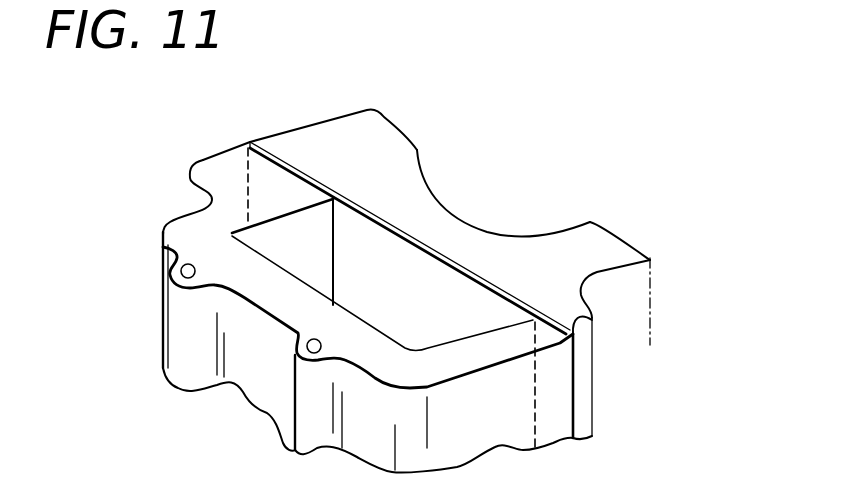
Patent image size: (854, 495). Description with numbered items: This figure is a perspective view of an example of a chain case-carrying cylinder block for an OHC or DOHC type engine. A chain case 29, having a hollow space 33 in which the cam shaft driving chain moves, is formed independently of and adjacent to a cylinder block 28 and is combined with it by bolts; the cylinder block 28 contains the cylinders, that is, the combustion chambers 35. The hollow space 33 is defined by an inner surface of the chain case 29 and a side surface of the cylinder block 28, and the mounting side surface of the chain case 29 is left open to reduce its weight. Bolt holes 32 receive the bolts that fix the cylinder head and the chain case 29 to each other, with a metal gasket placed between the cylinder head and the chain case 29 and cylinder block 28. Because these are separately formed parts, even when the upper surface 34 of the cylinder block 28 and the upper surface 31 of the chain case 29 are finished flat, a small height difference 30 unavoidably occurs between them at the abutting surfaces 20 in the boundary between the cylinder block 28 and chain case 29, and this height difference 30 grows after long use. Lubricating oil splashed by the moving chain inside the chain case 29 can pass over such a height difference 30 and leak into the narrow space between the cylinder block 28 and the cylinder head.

The abutting surfaces 20 is at (282, 188).
The cylinder block 28 is at (578, 358).
The chain case 29 is at (263, 360).
The height difference 30 is at (273, 153).
The upper surface of the chain case 31 is at (435, 365).
The bolt holes 32 is at (187, 270).
The hollow space 33 is at (277, 237).
The upper surface of the cylinder block 34 is at (527, 252).
The combustion chambers 35 is at (485, 228).